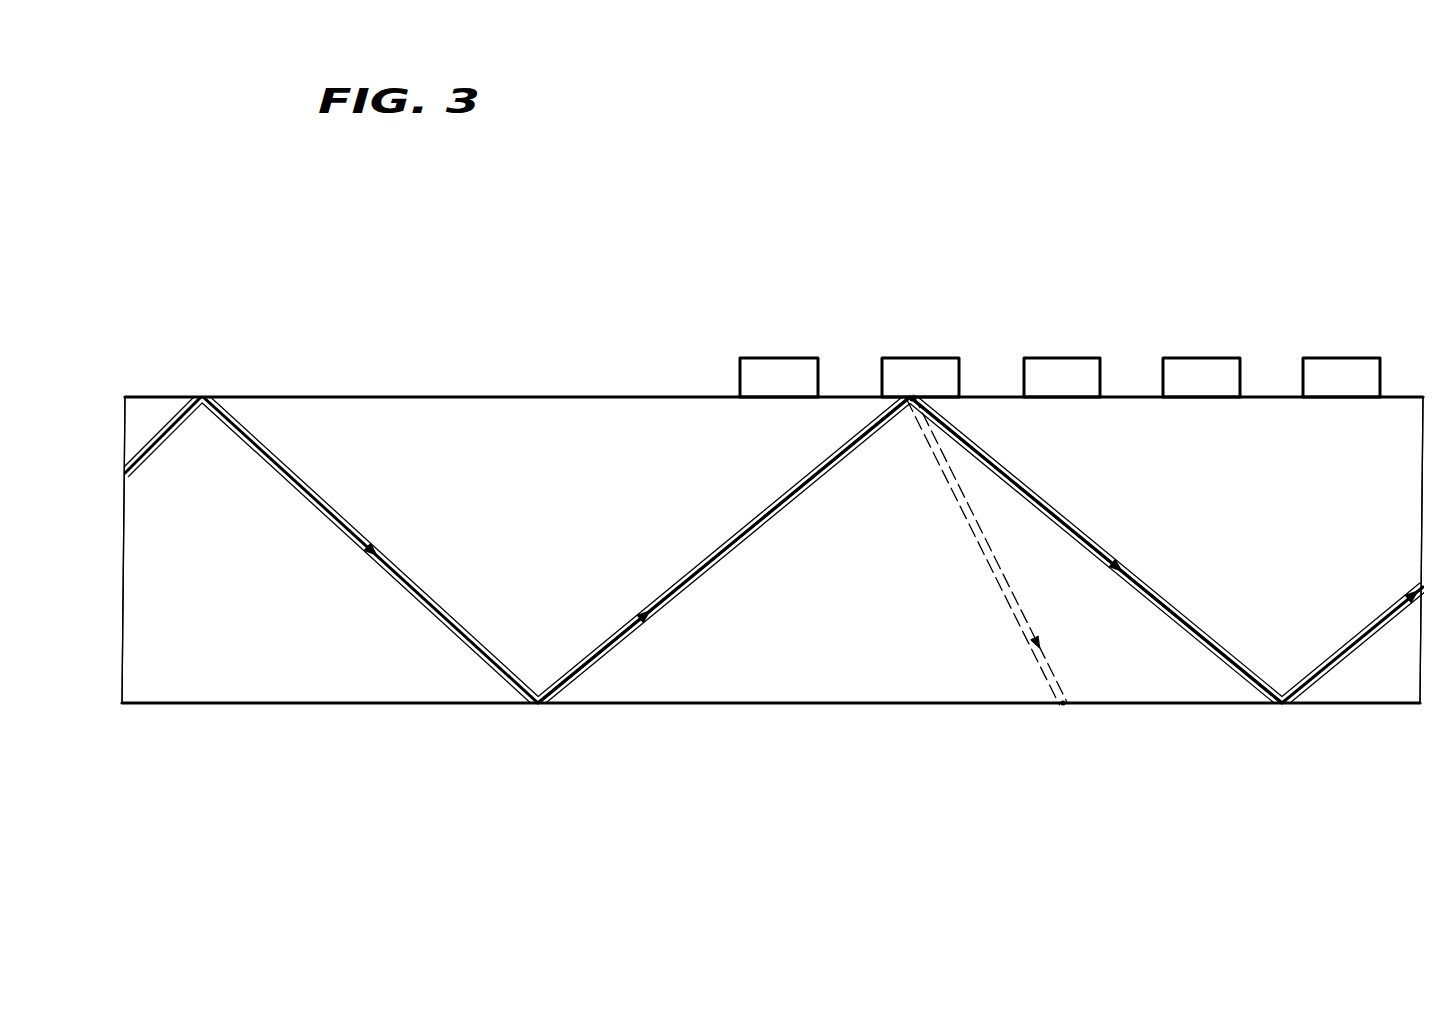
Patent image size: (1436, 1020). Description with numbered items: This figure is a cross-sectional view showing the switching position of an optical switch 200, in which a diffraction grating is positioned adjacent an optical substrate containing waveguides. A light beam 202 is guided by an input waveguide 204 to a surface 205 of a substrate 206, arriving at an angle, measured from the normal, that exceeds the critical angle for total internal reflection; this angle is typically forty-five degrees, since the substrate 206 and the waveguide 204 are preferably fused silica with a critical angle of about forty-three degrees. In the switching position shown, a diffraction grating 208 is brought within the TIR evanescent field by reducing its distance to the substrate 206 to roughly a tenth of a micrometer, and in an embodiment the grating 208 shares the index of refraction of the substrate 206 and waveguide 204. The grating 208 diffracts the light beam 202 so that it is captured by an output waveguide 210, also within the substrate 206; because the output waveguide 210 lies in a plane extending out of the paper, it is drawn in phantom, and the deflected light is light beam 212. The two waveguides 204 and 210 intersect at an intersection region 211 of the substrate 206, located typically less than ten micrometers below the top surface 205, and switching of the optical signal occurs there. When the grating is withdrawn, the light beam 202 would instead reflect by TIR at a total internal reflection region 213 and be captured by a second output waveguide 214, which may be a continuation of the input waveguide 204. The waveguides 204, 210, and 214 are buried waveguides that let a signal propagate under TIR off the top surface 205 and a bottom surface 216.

The optical switch 200 is at (1178, 223).
The light beam 202 is at (618, 637).
The input waveguide 204 is at (713, 548).
The surface 205 is at (332, 397).
The substrate 206 is at (1188, 678).
The diffraction grating 208 is at (797, 358).
The output waveguide 210 is at (1015, 622).
The intersection region 211 is at (897, 445).
The total internal reflection region 213 is at (917, 413).
The second output waveguide 214 is at (1080, 522).
The deflected light beam 212 is at (1063, 707).
The bottom surface 216 is at (368, 704).